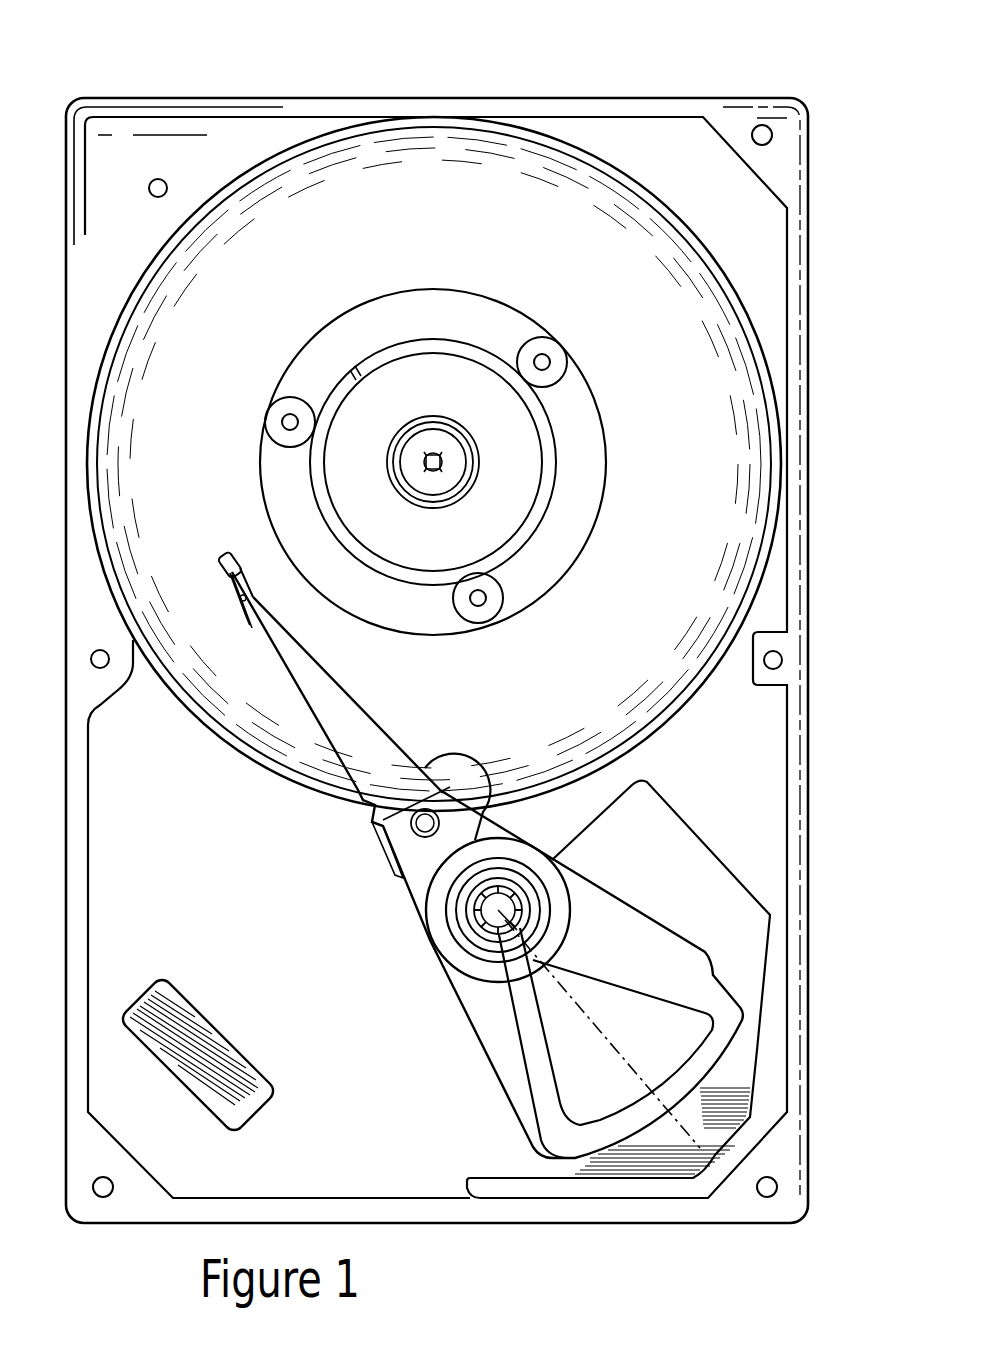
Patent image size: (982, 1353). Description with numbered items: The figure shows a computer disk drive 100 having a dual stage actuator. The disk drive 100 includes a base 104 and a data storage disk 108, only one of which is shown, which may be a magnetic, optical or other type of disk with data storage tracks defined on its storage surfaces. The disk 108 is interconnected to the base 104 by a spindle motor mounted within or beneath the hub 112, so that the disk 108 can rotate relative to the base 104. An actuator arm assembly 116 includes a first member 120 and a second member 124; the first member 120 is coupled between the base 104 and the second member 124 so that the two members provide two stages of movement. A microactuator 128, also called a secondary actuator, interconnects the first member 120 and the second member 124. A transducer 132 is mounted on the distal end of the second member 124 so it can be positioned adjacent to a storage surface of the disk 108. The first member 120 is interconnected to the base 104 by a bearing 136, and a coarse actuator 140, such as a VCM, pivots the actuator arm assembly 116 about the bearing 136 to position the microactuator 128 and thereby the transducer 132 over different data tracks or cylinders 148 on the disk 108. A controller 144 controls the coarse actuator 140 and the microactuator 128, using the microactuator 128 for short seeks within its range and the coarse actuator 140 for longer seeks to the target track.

The disk drive 100 is at (453, 78).
The base 104 is at (767, 765).
The data storage disk 108 is at (747, 422).
The hub 112 is at (413, 477).
The actuator arm assembly 116 is at (286, 693).
The first member 120 is at (322, 737).
The second member 124 is at (230, 583).
The microactuator 128 is at (252, 626).
The transducer 132 is at (223, 562).
The bearing 136 is at (445, 915).
The coarse actuator 140 is at (575, 1142).
The controller 144 is at (217, 1030).
The data tracks or cylinders 148 is at (335, 157).